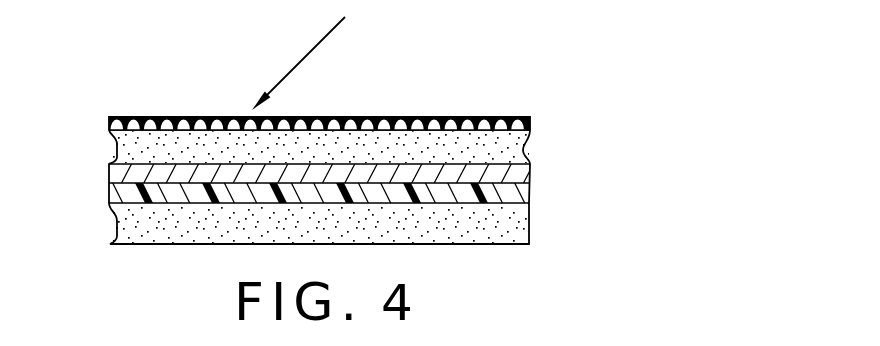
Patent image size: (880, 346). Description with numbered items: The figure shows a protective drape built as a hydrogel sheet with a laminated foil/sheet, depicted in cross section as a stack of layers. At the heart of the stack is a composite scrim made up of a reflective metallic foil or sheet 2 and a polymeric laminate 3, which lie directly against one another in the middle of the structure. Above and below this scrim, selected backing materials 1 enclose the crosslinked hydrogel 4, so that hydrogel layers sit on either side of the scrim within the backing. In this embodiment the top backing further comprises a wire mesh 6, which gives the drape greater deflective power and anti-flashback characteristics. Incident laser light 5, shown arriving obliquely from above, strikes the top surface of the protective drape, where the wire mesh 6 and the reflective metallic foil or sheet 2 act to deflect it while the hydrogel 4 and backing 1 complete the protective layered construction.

The backing materials 1 is at (483, 245).
The reflective metallic foil or sheet 2 is at (510, 176).
The polymeric laminate 3 is at (512, 193).
The crosslinked hydrogel 4 is at (117, 140).
The incident laser light 5 is at (305, 52).
The wire mesh 6 is at (476, 117).